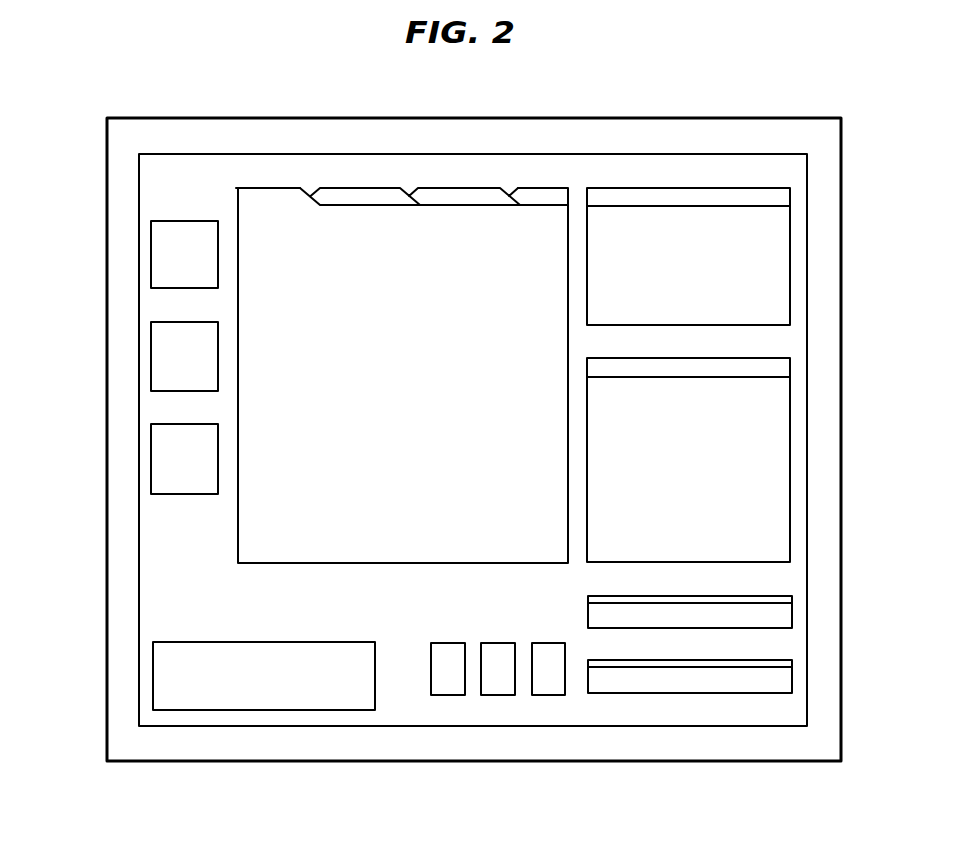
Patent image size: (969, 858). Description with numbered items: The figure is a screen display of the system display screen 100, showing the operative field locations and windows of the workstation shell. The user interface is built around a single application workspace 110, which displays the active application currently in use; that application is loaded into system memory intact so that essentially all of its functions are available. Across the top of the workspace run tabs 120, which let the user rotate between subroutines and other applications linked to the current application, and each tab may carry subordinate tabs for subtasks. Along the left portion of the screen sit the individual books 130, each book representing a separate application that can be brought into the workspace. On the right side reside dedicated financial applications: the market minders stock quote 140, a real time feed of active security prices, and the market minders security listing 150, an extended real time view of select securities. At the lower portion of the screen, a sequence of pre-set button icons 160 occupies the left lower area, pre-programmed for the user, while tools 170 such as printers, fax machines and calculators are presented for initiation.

The system display screen 100 is at (578, 118).
The application workspace 110 is at (268, 203).
The tabs 120 is at (438, 195).
The book 130 is at (151, 258).
The market minders stock quote 140 is at (690, 188).
The market minders security listing 150 is at (790, 509).
The pre-set button icons 160 is at (259, 712).
The tools 170 is at (548, 696).